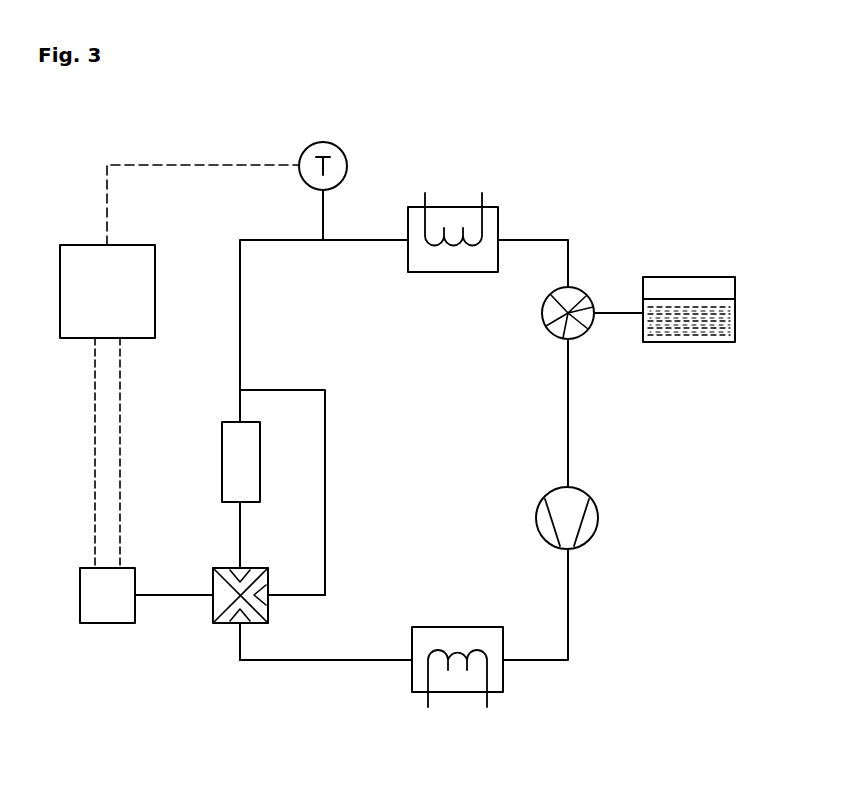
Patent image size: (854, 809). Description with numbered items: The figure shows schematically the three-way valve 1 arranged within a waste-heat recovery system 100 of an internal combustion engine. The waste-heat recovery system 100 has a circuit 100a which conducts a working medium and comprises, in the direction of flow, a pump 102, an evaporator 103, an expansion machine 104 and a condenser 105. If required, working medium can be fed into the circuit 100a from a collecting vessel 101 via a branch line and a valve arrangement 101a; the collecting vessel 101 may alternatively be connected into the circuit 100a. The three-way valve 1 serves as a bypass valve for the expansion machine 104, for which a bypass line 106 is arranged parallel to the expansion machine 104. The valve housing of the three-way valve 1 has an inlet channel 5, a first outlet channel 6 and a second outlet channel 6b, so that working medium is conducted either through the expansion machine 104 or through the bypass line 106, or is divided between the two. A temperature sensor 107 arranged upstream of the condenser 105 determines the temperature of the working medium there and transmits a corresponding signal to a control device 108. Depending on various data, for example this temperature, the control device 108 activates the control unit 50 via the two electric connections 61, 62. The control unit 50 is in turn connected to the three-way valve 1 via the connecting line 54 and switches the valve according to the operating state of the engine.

The three-way valve 1 is at (220, 608).
The inlet channel 5 is at (244, 642).
The first outlet channel 6 is at (242, 533).
The second outlet channel 6b is at (302, 598).
The control unit 50 is at (105, 609).
The connecting line 54 is at (172, 593).
The electric connection 61 is at (122, 440).
The electric connection 62 is at (94, 440).
The waste-heat recovery system 100 is at (650, 183).
The circuit 100a is at (585, 587).
The collecting vessel 101 is at (690, 288).
The valve arrangement 101a is at (542, 313).
The pump 102 is at (543, 522).
The evaporator 103 is at (458, 678).
The expansion machine 104 is at (232, 462).
The condenser 105 is at (452, 222).
The bypass line 106 is at (328, 490).
The temperature sensor 107 is at (323, 141).
The control device 108 is at (140, 287).